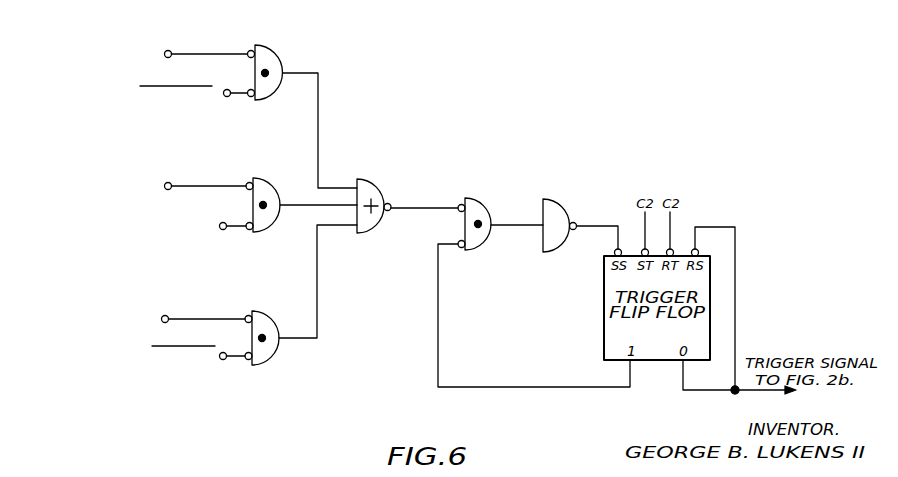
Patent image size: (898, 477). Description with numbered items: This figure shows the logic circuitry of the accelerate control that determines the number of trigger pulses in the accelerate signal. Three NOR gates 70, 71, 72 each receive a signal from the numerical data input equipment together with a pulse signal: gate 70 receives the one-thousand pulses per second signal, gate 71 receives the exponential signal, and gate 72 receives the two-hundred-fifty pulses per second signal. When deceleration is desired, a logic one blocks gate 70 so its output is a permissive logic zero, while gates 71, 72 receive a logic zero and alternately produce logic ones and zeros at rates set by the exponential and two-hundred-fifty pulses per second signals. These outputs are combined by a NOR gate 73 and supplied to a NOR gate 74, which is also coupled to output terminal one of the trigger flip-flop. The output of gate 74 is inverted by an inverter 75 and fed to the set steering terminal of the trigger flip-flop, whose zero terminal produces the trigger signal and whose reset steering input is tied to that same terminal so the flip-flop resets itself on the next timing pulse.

The NOR gate 70 is at (287, 50).
The NOR gate 71 is at (279, 183).
The NOR gate 72 is at (280, 316).
The NOR gate 73 is at (389, 191).
The NOR gate 74 is at (494, 210).
The inverter 75 is at (569, 207).